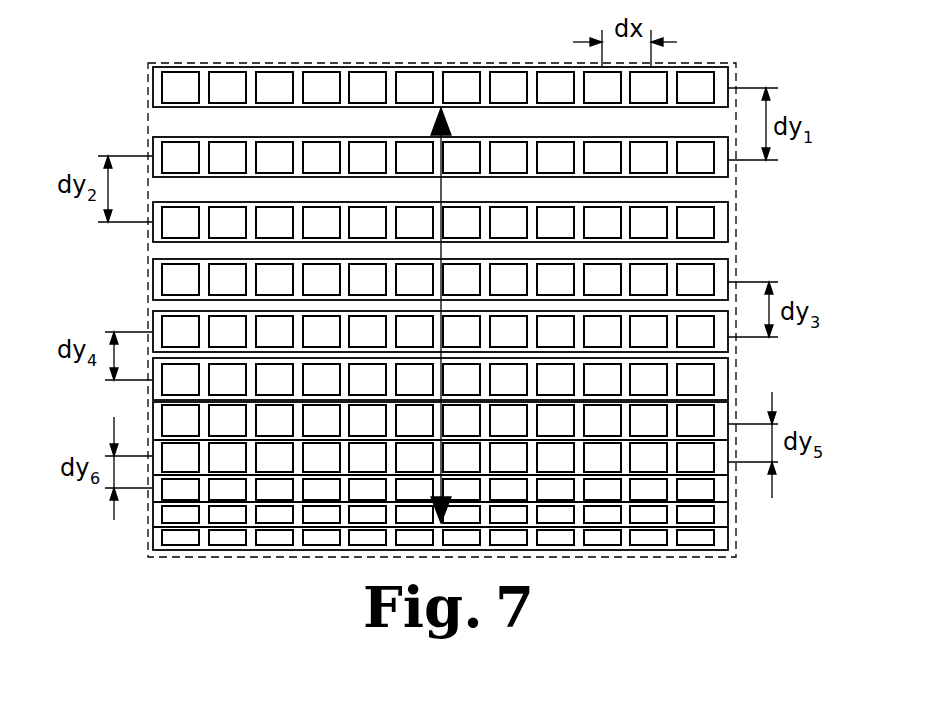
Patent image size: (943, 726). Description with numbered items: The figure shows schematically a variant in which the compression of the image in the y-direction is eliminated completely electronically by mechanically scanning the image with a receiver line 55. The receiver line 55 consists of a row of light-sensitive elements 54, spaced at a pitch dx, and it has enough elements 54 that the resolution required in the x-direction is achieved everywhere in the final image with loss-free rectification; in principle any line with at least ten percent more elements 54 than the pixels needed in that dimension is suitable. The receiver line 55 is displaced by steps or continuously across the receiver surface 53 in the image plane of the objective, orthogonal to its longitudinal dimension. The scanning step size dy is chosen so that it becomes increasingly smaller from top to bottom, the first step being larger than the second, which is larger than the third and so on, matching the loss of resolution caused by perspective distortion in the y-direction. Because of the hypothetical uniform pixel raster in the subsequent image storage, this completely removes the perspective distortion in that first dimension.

The receiver surface 53 is at (738, 530).
The light-sensitive elements 54 is at (413, 85).
The receiver line 55 is at (723, 78).